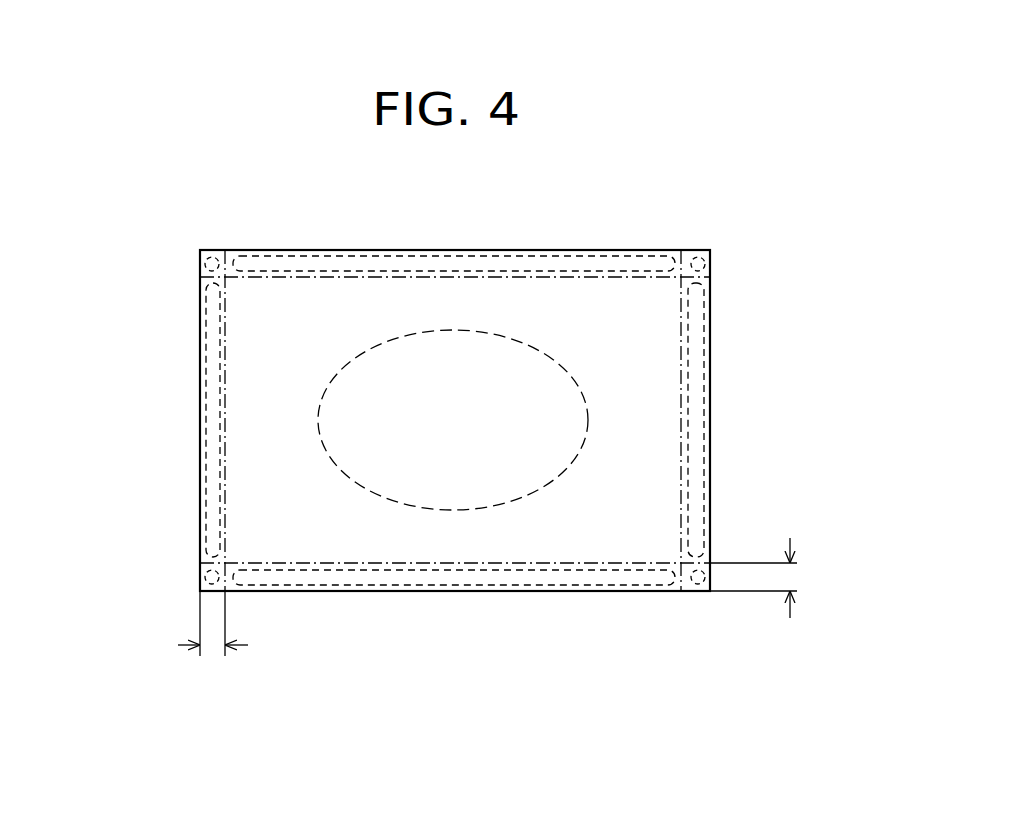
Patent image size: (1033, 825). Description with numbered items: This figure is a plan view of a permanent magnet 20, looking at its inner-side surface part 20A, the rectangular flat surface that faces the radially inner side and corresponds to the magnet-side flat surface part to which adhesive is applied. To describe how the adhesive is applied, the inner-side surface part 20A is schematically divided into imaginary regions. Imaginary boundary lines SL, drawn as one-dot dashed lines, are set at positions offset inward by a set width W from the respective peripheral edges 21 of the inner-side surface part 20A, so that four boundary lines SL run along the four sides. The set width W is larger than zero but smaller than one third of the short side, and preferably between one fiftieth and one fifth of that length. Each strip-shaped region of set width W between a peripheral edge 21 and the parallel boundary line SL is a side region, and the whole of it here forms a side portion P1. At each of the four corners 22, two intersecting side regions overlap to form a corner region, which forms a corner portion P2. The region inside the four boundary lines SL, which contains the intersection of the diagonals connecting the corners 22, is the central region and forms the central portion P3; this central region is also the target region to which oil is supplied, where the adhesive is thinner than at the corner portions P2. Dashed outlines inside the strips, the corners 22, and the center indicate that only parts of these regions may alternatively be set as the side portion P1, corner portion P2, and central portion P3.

The permanent magnet 20 is at (132, 341).
The inner-side surface part 20A is at (651, 359).
The peripheral edge 21 is at (352, 249).
The corner 22 is at (200, 250).
The side portion P1 is at (125, 483).
The corner portion P2 is at (200, 262).
The central portion P3 is at (405, 298).
The imaginary boundary line SL is at (679, 305).
The set width W is at (502, 611).